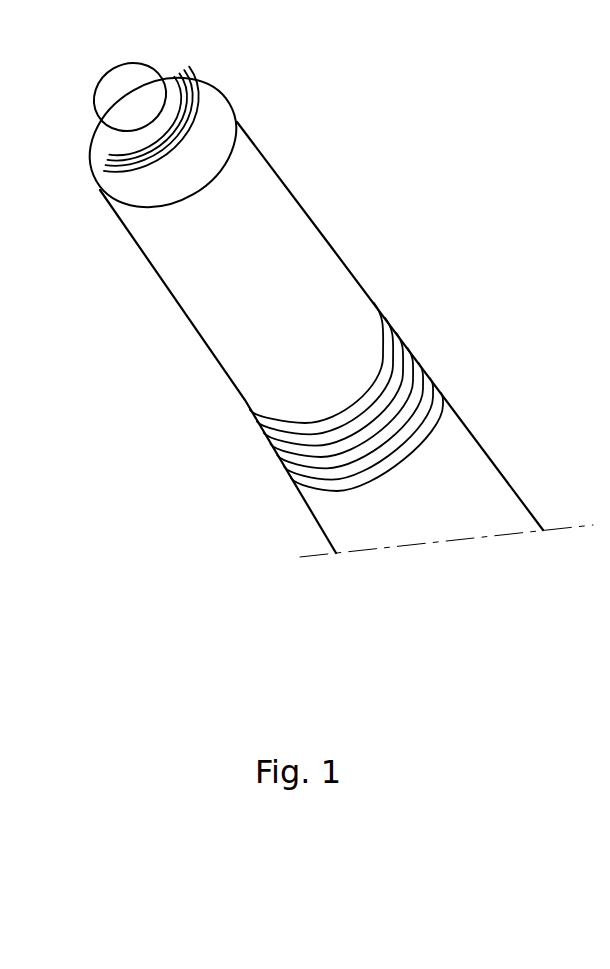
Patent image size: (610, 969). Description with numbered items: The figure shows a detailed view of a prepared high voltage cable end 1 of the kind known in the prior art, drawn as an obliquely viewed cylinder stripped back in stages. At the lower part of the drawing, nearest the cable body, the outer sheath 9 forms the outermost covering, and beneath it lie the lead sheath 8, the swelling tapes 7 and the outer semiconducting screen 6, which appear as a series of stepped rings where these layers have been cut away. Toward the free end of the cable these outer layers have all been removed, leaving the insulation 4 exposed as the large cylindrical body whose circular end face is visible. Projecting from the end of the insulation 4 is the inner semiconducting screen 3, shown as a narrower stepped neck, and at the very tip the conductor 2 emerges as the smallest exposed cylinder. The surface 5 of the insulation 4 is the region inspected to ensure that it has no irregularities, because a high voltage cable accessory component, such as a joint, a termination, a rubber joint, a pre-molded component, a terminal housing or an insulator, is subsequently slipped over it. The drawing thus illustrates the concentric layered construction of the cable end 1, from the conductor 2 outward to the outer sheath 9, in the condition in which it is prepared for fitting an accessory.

The high voltage cable end 1 is at (424, 182).
The conductor 2 is at (130, 84).
The inner semiconducting screen 3 is at (200, 108).
The insulation 4 is at (205, 160).
The surface 5 is at (277, 232).
The outer semiconducting screen 6 is at (387, 387).
The swelling tapes 7 is at (420, 357).
The lead sheath 8 is at (422, 440).
The outer sheath 9 is at (452, 493).